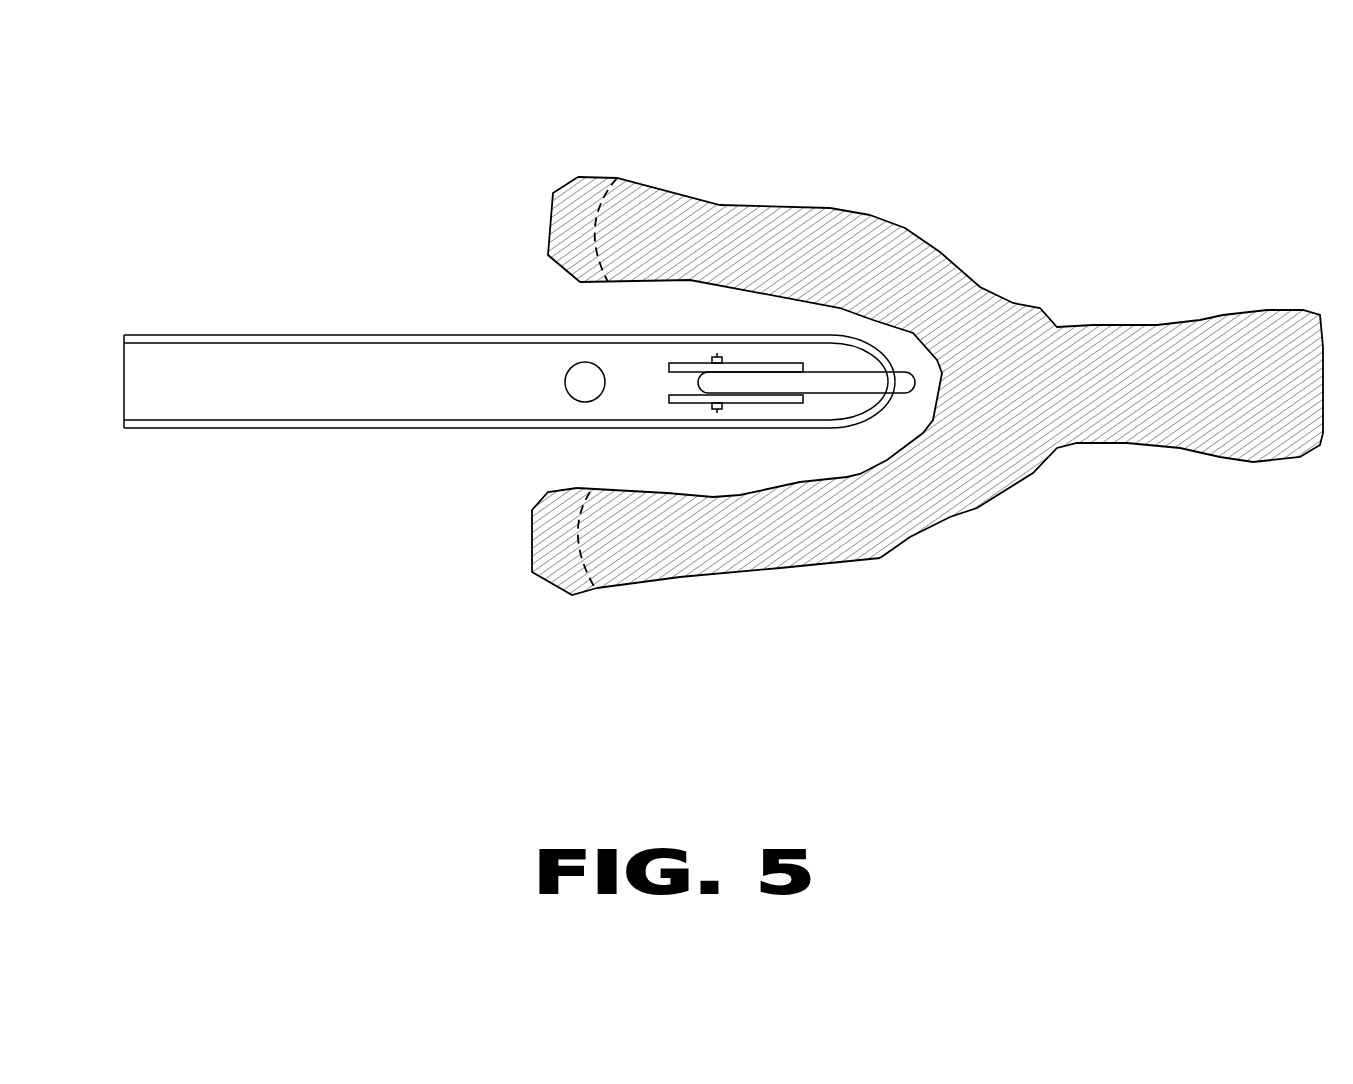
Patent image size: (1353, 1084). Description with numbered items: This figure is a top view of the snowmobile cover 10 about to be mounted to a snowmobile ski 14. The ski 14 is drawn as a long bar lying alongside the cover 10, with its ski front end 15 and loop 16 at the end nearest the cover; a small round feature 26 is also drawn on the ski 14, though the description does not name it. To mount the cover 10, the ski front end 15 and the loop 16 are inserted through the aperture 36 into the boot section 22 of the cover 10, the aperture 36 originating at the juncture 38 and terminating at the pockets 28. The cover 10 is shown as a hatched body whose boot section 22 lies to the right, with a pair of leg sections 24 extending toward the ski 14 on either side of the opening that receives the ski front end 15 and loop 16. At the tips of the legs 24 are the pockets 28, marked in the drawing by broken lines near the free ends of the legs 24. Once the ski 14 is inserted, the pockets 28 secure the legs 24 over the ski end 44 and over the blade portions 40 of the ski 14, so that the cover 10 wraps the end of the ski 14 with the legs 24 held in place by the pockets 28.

The snowmobile cover 10 is at (727, 380).
The snowmobile ski 14 is at (519, 390).
The ski front end 15 is at (842, 400).
The loop 16 is at (767, 385).
The boot section 22 is at (1175, 370).
The leg sections 24 is at (692, 242).
The hole 26 is at (583, 387).
The pockets 28 is at (562, 222).
The aperture 36 is at (973, 380).
The juncture 38 is at (1007, 383).
The blade portions 40 is at (128, 333).
The ski end 44 is at (152, 428).